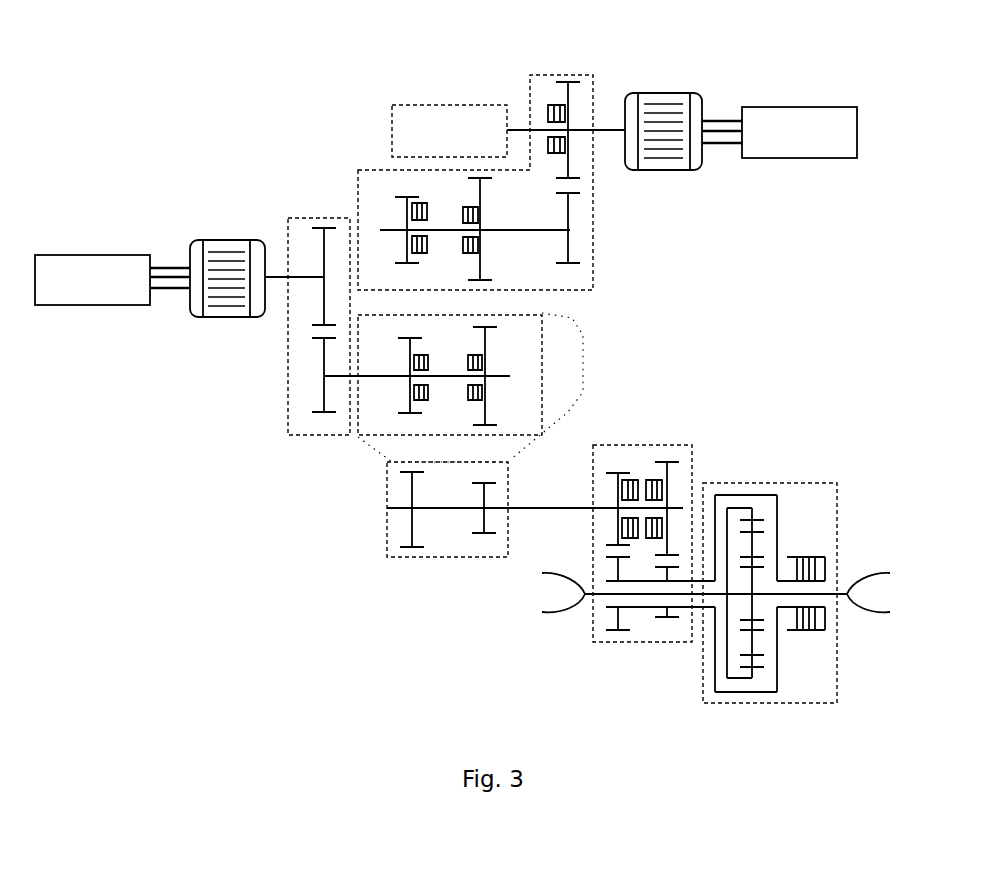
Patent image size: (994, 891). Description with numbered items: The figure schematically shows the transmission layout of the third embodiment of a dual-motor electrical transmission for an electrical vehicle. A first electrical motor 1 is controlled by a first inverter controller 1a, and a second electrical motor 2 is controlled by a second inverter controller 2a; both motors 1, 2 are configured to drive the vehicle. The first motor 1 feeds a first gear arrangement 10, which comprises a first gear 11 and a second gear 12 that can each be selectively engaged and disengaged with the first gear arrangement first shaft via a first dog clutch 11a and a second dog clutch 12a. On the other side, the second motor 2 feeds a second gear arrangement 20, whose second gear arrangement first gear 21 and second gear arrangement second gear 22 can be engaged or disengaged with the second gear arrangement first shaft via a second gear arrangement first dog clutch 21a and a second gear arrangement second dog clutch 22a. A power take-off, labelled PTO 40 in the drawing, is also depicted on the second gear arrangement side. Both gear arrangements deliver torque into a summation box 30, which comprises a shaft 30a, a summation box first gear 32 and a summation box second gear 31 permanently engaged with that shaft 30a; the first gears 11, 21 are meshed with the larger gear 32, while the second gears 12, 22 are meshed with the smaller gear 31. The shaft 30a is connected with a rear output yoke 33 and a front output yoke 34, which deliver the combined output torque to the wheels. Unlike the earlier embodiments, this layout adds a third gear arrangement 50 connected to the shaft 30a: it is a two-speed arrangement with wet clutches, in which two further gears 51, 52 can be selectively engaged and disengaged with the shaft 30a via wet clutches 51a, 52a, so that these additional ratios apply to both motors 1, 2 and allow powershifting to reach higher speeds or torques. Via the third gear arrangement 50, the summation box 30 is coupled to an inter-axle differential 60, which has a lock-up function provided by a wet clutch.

The first electrical motor 1 is at (210, 240).
The first inverter controller 1a is at (98, 253).
The second electrical motor 2 is at (660, 92).
The second inverter controller 2a is at (790, 107).
The first gear arrangement 10 is at (288, 337).
The first gear arrangement first gear 11 is at (413, 393).
The first dog clutch 11a is at (420, 397).
The first gear arrangement second gear 12 is at (487, 403).
The second dog clutch 12a is at (477, 398).
The second gear arrangement 20 is at (487, 194).
The second gear arrangement first gear 21 is at (402, 203).
The second gear arrangement first dog clutch 21a is at (427, 205).
The second gear arrangement second gear 22 is at (480, 243).
The second gear arrangement second dog clutch 22a is at (467, 245).
The summation box 30 is at (385, 518).
The shaft 30a is at (445, 512).
The summation box second gear 31 is at (490, 537).
The summation box first gear 32 is at (410, 545).
The rear output yoke 33 is at (560, 612).
The front output yoke 34 is at (870, 610).
The power take-off PTO 40 is at (447, 103).
The third gear arrangement 50 is at (654, 496).
The gear 51 is at (612, 473).
The wet clutch 51a is at (625, 497).
The gear 52 is at (668, 464).
The wet clutch 52a is at (665, 488).
The inter-axle differential 60 is at (797, 483).